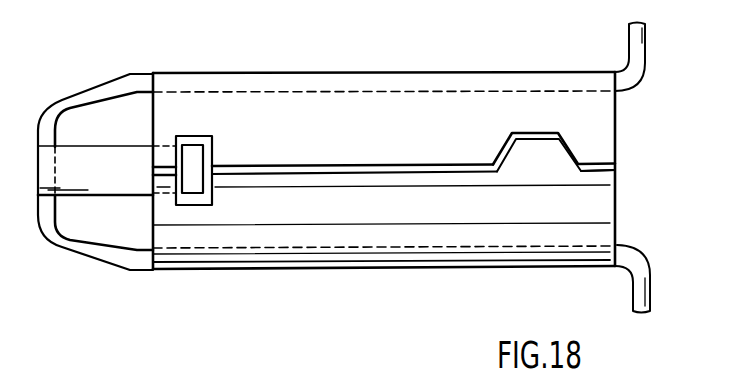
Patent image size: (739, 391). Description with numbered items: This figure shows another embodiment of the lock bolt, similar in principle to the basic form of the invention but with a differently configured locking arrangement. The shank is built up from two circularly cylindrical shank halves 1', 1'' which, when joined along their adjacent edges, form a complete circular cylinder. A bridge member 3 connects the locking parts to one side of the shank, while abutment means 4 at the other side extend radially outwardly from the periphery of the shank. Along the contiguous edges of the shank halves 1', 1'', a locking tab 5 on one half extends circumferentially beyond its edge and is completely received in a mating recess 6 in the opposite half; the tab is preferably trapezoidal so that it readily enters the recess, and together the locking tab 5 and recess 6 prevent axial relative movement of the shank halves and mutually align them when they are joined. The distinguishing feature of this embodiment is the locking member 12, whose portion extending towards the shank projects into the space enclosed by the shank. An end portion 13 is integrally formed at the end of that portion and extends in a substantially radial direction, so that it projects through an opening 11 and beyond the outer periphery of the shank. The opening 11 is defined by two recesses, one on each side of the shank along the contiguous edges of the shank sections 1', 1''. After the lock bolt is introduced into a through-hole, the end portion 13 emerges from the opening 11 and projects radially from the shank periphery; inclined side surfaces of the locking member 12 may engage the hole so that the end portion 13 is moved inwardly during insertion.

The shank half 1' is at (384, 152).
The shank half 1'' is at (384, 252).
The bridge member 3 is at (90, 89).
The abutment means 4 is at (638, 68).
The locking tab 5 is at (565, 165).
The recess 6 is at (550, 127).
The opening 11 is at (213, 147).
The locking member 12 is at (102, 172).
The end portion 13 is at (192, 148).